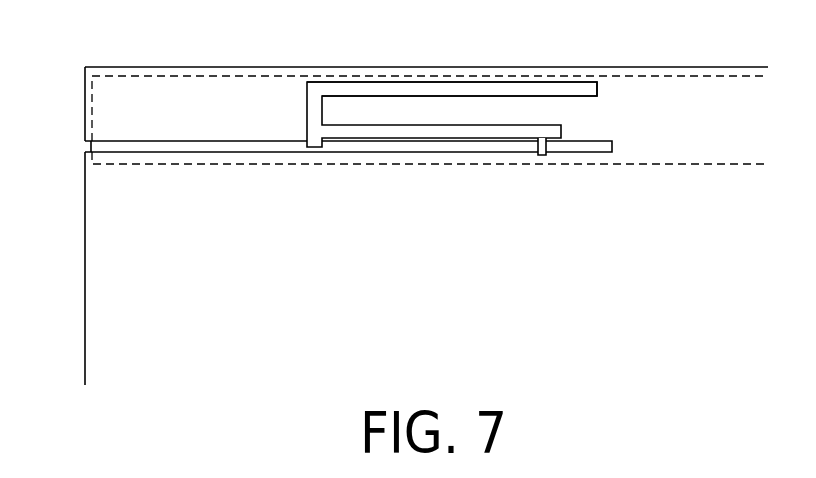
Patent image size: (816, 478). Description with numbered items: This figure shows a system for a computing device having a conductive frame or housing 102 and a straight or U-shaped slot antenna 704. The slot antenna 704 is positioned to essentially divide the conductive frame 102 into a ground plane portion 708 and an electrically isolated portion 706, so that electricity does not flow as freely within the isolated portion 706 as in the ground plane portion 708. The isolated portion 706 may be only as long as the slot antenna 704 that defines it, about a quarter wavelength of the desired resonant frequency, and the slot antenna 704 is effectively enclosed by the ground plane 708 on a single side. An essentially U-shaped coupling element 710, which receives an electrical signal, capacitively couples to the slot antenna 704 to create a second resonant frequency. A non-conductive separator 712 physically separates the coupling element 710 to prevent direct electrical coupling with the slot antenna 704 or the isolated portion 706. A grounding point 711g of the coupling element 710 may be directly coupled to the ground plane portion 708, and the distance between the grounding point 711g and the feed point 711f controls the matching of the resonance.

The conductive frame 102 is at (665, 67).
The slot antenna 704 is at (607, 141).
The electrically isolated portion 706 is at (80, 68).
The ground plane portion 708 is at (80, 152).
The coupling element 710 is at (345, 83).
The feed point 711f is at (593, 81).
The grounding point 711g is at (557, 141).
The non-conductive separator 712 is at (128, 77).